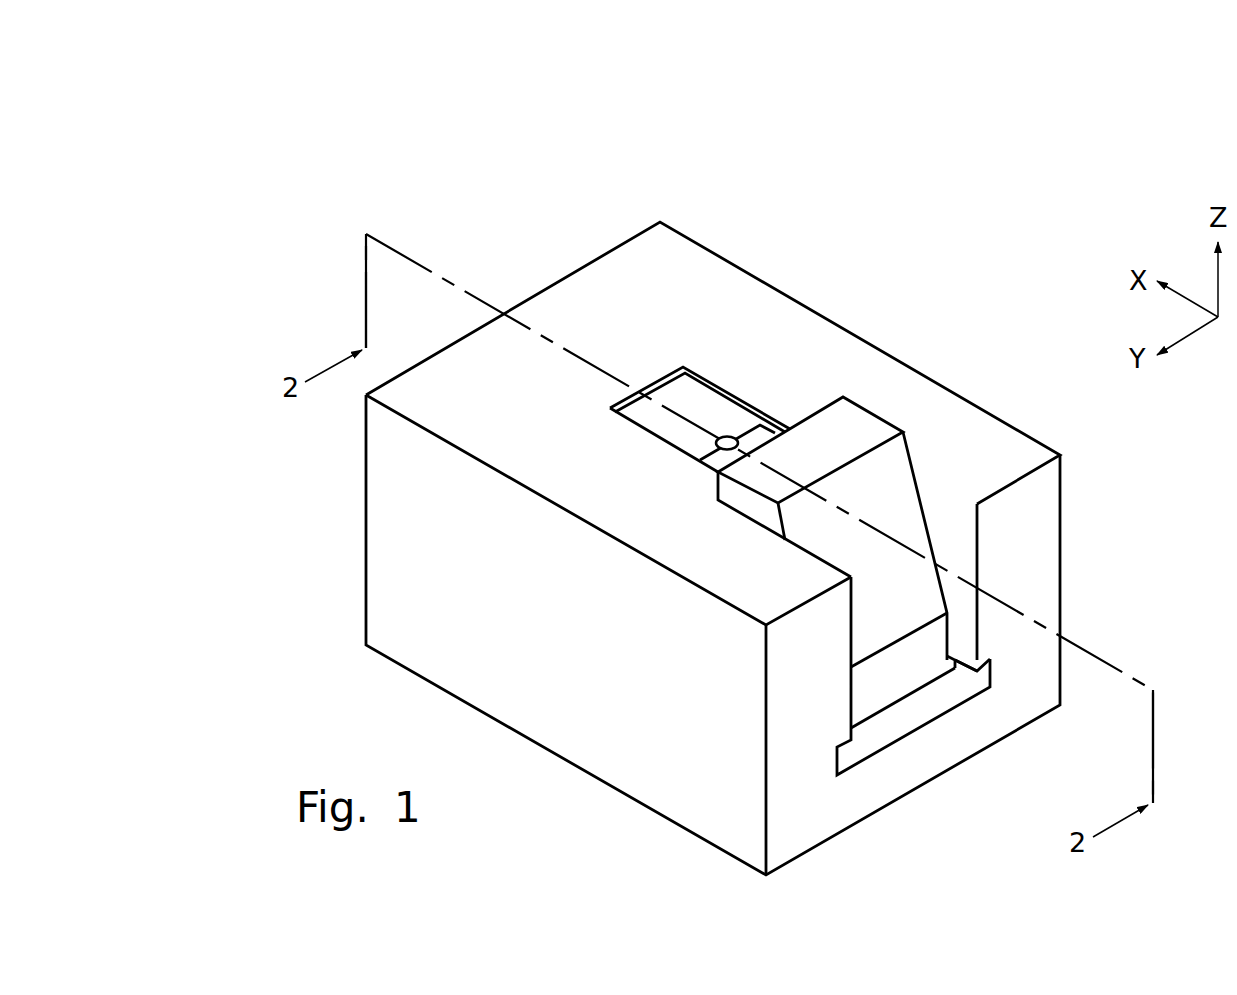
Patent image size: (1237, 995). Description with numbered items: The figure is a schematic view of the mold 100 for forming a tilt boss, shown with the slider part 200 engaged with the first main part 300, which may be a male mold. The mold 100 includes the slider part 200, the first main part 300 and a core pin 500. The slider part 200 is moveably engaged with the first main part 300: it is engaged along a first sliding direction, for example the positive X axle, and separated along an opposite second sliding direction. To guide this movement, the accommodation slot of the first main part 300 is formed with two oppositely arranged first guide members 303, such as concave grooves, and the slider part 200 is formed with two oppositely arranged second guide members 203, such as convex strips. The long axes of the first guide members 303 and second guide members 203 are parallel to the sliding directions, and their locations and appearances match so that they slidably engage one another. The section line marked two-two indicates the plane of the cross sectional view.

The mold for forming tilt boss 100 is at (223, 175).
The first main part 300 is at (660, 213).
The slider part 200 is at (819, 396).
The core pin 500 is at (727, 428).
The first guide members 303 is at (982, 673).
The second guide members 203 is at (952, 670).